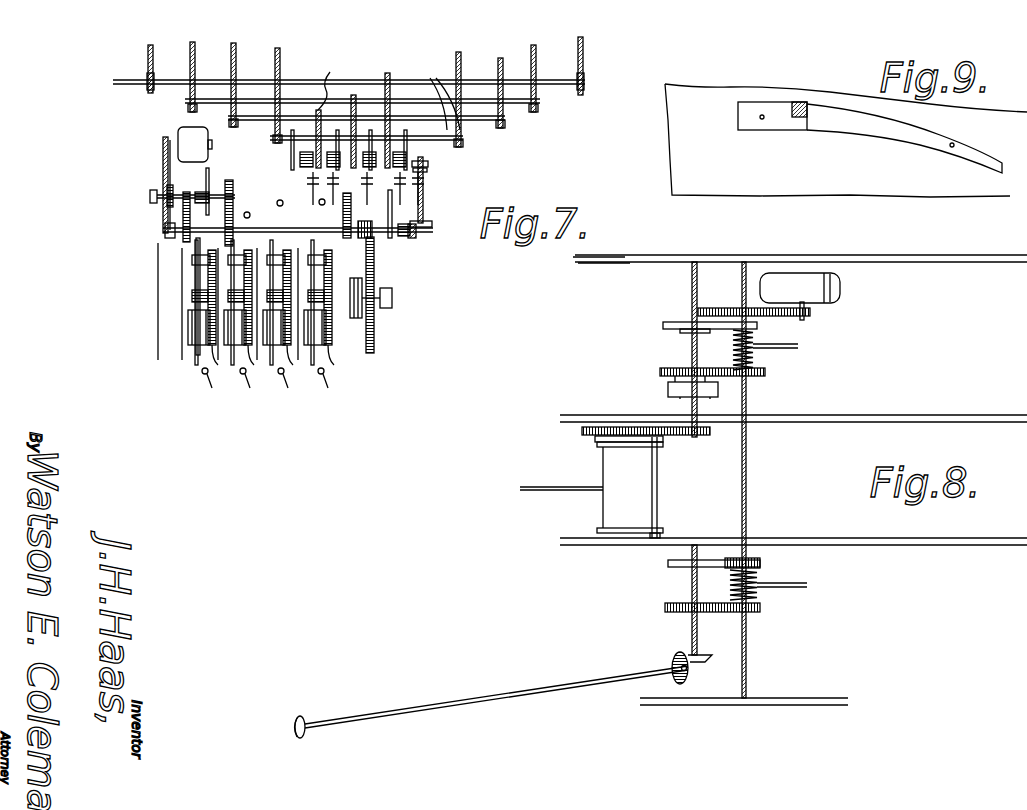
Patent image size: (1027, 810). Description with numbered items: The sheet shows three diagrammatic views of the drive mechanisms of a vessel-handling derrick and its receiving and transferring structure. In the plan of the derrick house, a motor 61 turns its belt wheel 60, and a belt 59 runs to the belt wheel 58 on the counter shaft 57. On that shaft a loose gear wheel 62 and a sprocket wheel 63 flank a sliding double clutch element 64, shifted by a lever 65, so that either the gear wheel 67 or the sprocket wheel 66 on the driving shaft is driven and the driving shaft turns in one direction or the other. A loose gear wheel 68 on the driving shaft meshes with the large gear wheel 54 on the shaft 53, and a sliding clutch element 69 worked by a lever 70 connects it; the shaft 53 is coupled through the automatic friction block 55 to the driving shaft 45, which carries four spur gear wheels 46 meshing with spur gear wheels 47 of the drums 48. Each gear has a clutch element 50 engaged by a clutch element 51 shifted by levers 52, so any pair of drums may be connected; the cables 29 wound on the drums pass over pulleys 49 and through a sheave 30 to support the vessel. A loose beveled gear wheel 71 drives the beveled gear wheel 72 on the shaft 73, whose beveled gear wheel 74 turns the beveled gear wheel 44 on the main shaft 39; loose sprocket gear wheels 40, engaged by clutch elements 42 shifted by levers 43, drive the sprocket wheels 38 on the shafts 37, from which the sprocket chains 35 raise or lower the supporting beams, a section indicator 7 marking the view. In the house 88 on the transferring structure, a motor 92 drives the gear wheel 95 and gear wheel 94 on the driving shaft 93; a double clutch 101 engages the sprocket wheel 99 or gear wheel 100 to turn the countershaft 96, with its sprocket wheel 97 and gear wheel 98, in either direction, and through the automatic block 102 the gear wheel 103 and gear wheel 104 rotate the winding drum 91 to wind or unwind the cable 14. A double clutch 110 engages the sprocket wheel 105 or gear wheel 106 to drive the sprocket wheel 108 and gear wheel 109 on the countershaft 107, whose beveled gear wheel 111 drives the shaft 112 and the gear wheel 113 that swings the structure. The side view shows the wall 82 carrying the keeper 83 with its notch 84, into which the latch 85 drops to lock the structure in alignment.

In FIG. 7, the section indicator 7 is at (340, 367).
In FIG. 8, the cable 14 is at (558, 487).
In FIG. 7, the cable 29 is at (296, 386).
In FIG. 7, the sheave 30 is at (146, 79).
In FIG. 7, the sprocket chain 35 is at (280, 67).
In FIG. 7, the longitudinally extending shaft 37 is at (435, 97).
In FIG. 7, the sprocket wheel 38 is at (268, 150).
In FIG. 7, the power driven main shaft 39 is at (432, 160).
In FIG. 7, the loose sprocket gear wheel 40 is at (297, 157).
In FIG. 7, the clutch element 42 is at (396, 115).
In FIG. 7, the lever 43 is at (200, 190).
In FIG. 7, the beveled gear wheel 44 is at (430, 163).
In FIG. 7, the driving shaft 45 is at (190, 310).
In FIG. 7, the spur gear wheel 46 is at (198, 291).
In FIG. 7, the spur gear wheel 47 is at (200, 268).
In FIG. 7, the drum 48 is at (198, 280).
In FIG. 7, the pulley 49 is at (192, 371).
In FIG. 7, the clutch element 50 is at (424, 236).
In FIG. 7, the clutch element 51 is at (190, 300).
In FIG. 7, the lever 52 is at (236, 247).
In FIG. 7, the shaft 53 is at (388, 308).
In FIG. 7, the gear wheel 54 is at (376, 344).
In FIG. 7, the automatic friction block 55 is at (362, 291).
In FIG. 7, the counter shaft 57 is at (149, 201).
In FIG. 7, the belt wheel 58 is at (168, 206).
In FIG. 7, the belt 59 is at (168, 175).
In FIG. 7, the belt wheel 60 is at (162, 142).
In FIG. 7, the motor 61 is at (208, 148).
In FIG. 7, the loose gear wheel 62 is at (236, 204).
In FIG. 7, the sprocket wheel 63 is at (181, 207).
In FIG. 7, the sliding double clutch element 64 is at (210, 188).
In FIG. 7, the lever 65 is at (205, 172).
In FIG. 7, the sprocket wheel 66 is at (165, 235).
In FIG. 7, the gear wheel 67 is at (190, 242).
In FIG. 7, the loose gear wheel 68 is at (372, 236).
In FIG. 7, the sliding clutch element 69 is at (351, 226).
In FIG. 7, the lever 70 is at (343, 212).
In FIG. 7, the loose beveled gear wheel 71 is at (415, 239).
In FIG. 7, the beveled gear wheel 72 is at (428, 222).
In FIG. 7, the shaft 73 is at (425, 192).
In FIG. 7, the beveled gear wheel 74 is at (430, 171).
In FIG. 9, the wall 82 is at (672, 148).
In FIG. 9, the keeper 83 is at (892, 132).
In FIG. 9, the notch 84 is at (800, 118).
In FIG. 9, the latch 85 is at (800, 101).
In FIG. 8, the house 88 is at (695, 262).
In FIG. 8, the winding drum 91 is at (650, 500).
In FIG. 8, the motor 92 is at (841, 289).
In FIG. 8, the driving shaft 93 is at (747, 400).
In FIG. 8, the gear wheel 94 is at (716, 307).
In FIG. 8, the gear wheel 95 is at (805, 317).
In FIG. 8, the countershaft 96 is at (690, 291).
In FIG. 8, the sprocket wheel 97 is at (668, 331).
In FIG. 8, the gear wheel 98 is at (659, 370).
In FIG. 8, the sprocket wheel 99 is at (758, 327).
In FIG. 8, the gear wheel 100 is at (766, 372).
In FIG. 8, the double clutch 101 is at (733, 349).
In FIG. 8, the automatic block 102 is at (667, 392).
In FIG. 8, the gear wheel 103 is at (696, 436).
In FIG. 8, the gear wheel 104 is at (598, 425).
In FIG. 8, the sprocket wheel 105 is at (752, 557).
In FIG. 8, the gear wheel 106 is at (762, 609).
In FIG. 8, the countershaft 107 is at (690, 590).
In FIG. 8, the sprocket wheel 108 is at (672, 564).
In FIG. 8, the gear wheel 109 is at (668, 612).
In FIG. 8, the double clutch 110 is at (760, 579).
In FIG. 8, the beveled gear wheel 111 is at (702, 655).
In FIG. 8, the shaft 112 is at (578, 683).
In FIG. 8, the gear wheel 113 is at (303, 716).